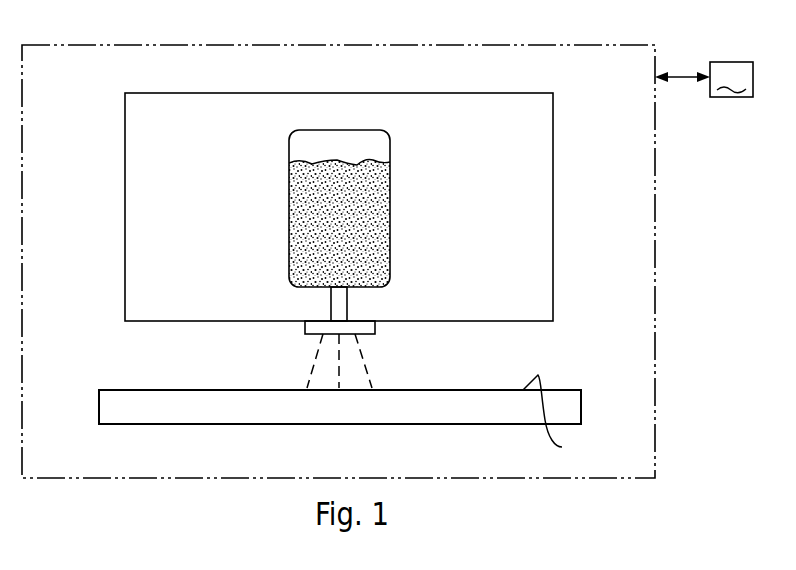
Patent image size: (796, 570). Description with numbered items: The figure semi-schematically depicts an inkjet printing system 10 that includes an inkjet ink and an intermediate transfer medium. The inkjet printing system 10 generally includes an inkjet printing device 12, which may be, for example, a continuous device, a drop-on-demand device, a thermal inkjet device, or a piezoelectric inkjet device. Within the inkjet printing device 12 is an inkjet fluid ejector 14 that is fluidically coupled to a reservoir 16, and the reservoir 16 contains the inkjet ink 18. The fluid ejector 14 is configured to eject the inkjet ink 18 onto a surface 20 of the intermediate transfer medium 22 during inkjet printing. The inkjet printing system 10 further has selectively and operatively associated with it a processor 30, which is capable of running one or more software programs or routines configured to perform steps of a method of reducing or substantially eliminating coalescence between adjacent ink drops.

The inkjet printing system 10 is at (88, 45).
The inkjet printing device 12 is at (400, 93).
The inkjet fluid ejector 14 is at (304, 326).
The reservoir 16 is at (342, 130).
The inkjet ink 18 is at (289, 163).
The surface 20 is at (559, 417).
The intermediate transfer medium 22 is at (582, 405).
The processor 30 is at (704, 79).